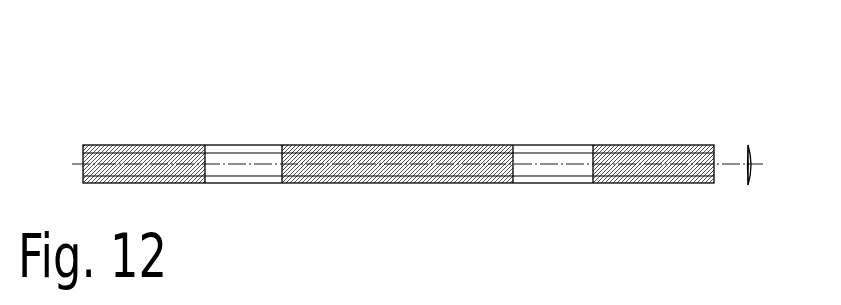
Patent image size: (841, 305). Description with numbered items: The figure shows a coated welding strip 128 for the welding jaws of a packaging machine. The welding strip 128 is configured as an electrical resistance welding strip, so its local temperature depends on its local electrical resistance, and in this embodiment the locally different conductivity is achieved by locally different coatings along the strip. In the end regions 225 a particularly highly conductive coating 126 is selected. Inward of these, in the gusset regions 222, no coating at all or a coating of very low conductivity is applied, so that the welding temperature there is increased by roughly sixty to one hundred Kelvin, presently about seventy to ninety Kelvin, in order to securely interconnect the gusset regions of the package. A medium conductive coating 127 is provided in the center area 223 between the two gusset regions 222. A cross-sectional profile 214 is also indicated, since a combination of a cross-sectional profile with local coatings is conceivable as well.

The welding strip 128 is at (168, 83).
The coating 126 is at (183, 138).
The end regions 225 is at (133, 138).
The gusset regions 222 is at (248, 145).
The medium conductive coating 127 is at (363, 135).
The center area 223 is at (423, 140).
The cross-sectional profile 214 is at (750, 147).